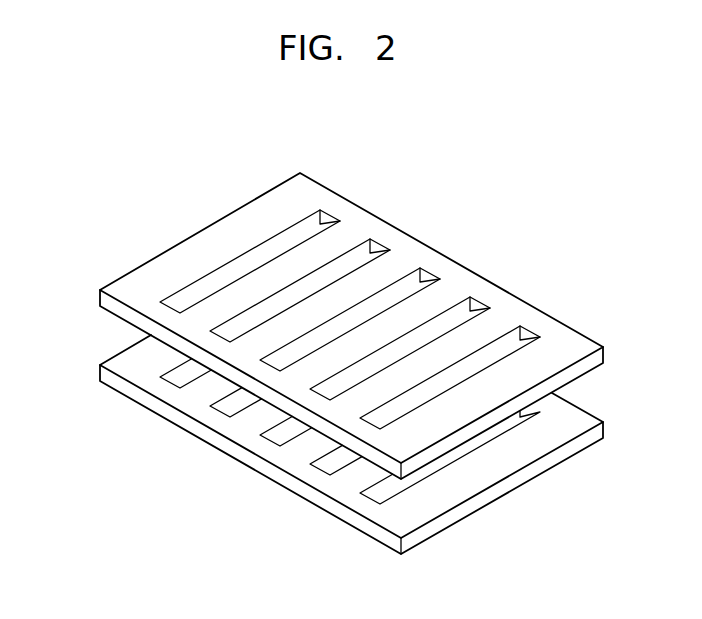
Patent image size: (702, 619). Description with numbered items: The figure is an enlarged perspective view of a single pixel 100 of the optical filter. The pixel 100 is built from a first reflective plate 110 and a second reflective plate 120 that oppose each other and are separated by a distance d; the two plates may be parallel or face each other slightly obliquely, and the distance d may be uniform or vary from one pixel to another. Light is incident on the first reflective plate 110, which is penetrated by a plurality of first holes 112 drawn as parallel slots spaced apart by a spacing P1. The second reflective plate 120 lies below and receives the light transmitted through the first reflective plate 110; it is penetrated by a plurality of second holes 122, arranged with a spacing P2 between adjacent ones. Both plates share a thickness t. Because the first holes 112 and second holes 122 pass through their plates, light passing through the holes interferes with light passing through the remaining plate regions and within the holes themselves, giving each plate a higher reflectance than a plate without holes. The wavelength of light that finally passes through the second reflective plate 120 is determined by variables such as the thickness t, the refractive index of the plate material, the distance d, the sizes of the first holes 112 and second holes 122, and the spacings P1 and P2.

The pixel 100 is at (677, 258).
The first reflective plate 110 is at (577, 331).
The first holes 112 is at (333, 212).
The second reflective plate 120 is at (580, 443).
The second holes 122 is at (266, 440).
The distance d is at (100, 365).
The spacing between adjacent first holes P1 is at (338, 222).
The spacing between adjacent second holes P2 is at (205, 427).
The thickness t is at (401, 538).